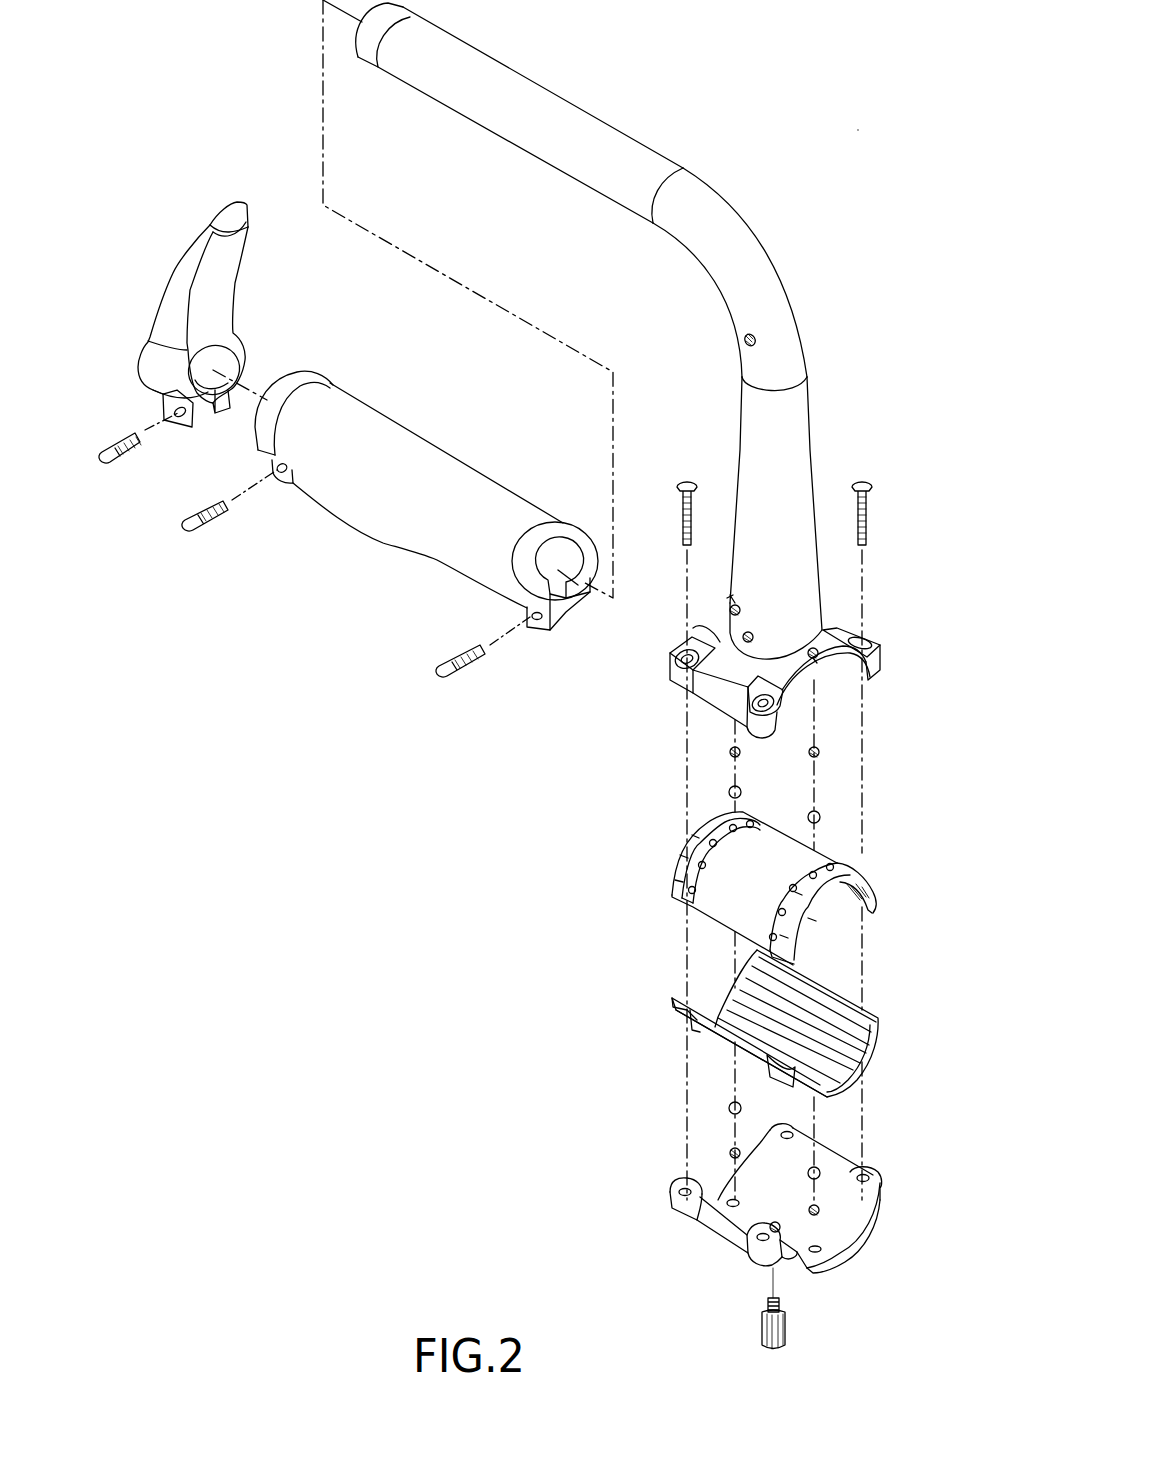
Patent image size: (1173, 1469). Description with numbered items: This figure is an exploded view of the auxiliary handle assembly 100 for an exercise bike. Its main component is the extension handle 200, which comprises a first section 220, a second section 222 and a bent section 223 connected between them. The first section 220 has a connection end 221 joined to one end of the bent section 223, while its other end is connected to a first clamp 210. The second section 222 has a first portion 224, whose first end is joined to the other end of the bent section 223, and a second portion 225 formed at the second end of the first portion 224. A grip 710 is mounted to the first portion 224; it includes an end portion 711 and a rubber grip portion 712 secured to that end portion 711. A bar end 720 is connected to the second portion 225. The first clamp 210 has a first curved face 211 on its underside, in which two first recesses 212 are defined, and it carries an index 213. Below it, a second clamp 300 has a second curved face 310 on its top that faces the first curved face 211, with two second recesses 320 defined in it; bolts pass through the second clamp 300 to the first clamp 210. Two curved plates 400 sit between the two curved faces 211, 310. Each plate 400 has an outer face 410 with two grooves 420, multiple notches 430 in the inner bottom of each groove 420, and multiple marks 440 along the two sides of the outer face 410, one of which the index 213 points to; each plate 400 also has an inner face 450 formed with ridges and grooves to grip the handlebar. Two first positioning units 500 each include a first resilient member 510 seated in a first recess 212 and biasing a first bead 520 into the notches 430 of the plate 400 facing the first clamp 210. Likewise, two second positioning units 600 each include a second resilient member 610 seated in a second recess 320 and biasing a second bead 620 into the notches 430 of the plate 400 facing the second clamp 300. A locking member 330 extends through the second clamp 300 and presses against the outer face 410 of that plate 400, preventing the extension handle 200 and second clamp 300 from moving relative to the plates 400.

The auxiliary handle assembly 100 is at (860, 128).
The extension handle 200 is at (747, 176).
The first clamp 210 is at (728, 600).
The first curved face 211 is at (850, 667).
The first recesses 212 is at (817, 663).
The index 213 is at (822, 632).
The first section 220 is at (822, 468).
The connection end 221 is at (805, 412).
The second section 222 is at (645, 143).
The bent section 223 is at (750, 227).
The first portion 224 is at (523, 87).
The second portion 225 is at (363, 60).
The second clamp 300 is at (730, 1230).
The second curved face 310 is at (815, 1258).
The second recesses 320 is at (797, 1252).
The locking member 330 is at (755, 1323).
The plates 400 is at (730, 917).
The outer face 410 is at (775, 954).
The grooves 420 is at (675, 880).
The notches 430 is at (702, 827).
The marks 440 is at (687, 853).
The inner face 450 is at (840, 1067).
The first positioning units 500 is at (595, 733).
The first resilient member 510 is at (730, 752).
The first bead 520 is at (728, 792).
The second positioning units 600 is at (592, 1083).
The second resilient member 610 is at (729, 1153).
The second bead 620 is at (729, 1108).
The grip 710 is at (348, 550).
The end portion 711 is at (300, 377).
The grip portion 712 is at (402, 433).
The bar end 720 is at (157, 280).